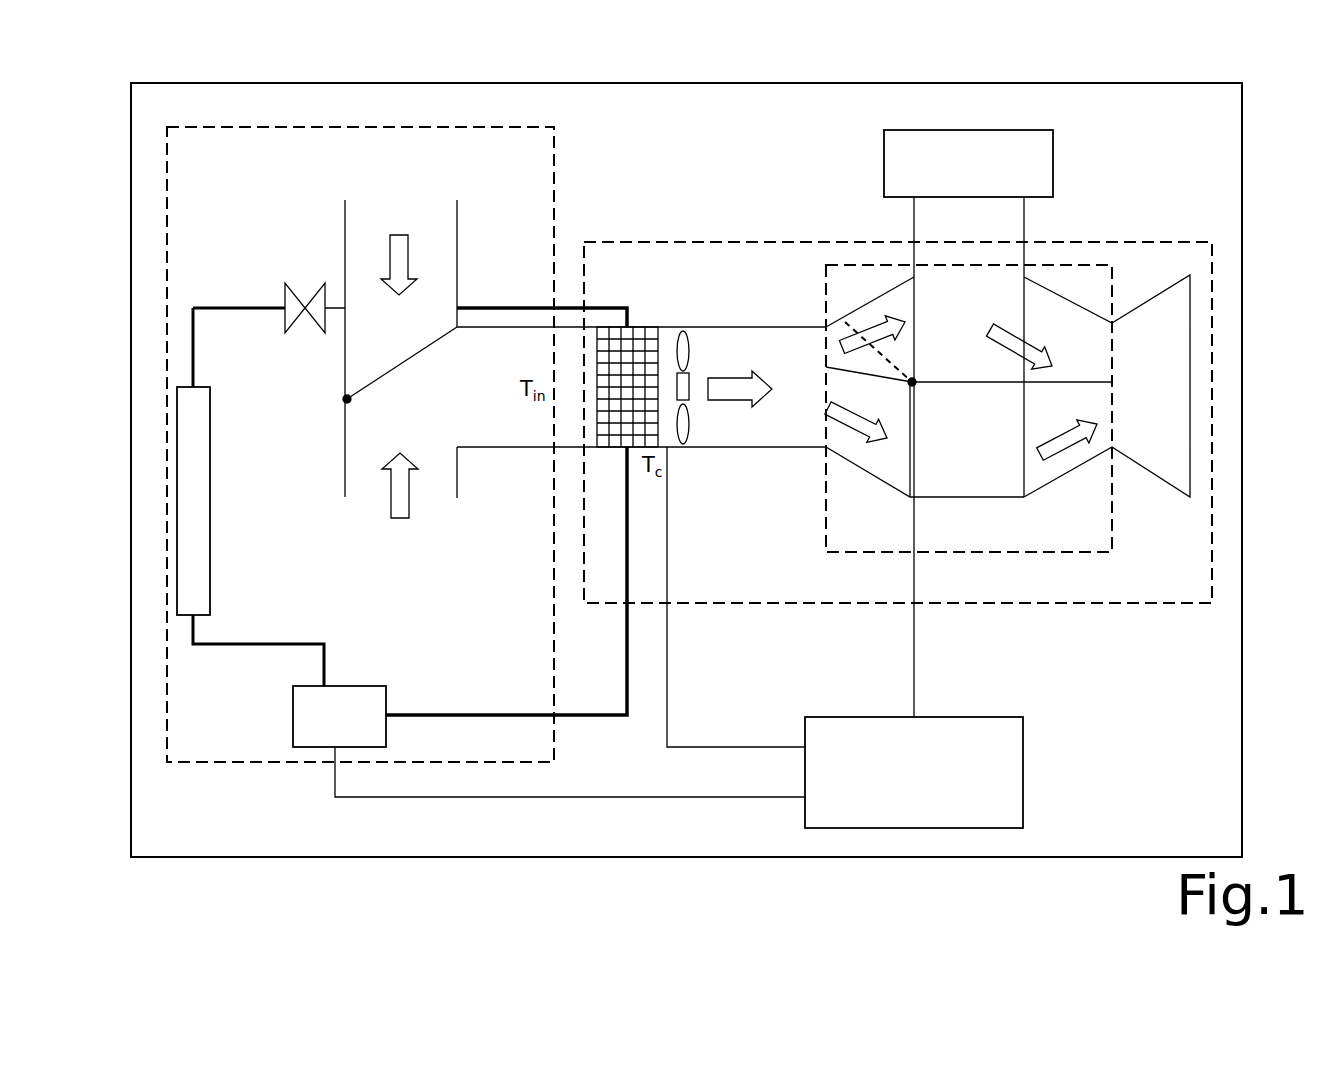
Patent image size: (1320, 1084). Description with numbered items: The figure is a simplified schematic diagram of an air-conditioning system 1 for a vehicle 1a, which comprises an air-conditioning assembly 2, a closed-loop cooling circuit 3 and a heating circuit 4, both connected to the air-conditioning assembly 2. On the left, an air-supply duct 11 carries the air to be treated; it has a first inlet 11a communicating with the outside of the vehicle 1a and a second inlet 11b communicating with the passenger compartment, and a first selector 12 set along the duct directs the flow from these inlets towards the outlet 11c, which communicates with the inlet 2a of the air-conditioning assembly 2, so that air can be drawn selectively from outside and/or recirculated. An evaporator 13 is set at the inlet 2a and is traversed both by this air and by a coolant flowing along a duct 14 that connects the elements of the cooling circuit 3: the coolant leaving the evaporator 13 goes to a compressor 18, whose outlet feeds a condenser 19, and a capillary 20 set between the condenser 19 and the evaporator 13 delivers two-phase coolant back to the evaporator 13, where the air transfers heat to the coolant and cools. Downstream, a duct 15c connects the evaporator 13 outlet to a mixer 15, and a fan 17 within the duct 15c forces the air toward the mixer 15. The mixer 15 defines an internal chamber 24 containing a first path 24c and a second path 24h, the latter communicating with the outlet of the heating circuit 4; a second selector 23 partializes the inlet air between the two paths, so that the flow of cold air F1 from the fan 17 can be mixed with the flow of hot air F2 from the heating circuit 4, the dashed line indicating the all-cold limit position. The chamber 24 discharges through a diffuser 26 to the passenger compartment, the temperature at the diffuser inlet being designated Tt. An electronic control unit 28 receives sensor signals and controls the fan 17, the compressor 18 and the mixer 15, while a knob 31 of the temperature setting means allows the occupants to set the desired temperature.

The air-conditioning system 1 is at (701, 208).
The vehicle 1a is at (521, 848).
The air-conditioning assembly 2 is at (730, 597).
The inlet of the air-conditioning assembly 2a is at (597, 447).
The cooling circuit 3 is at (201, 762).
The heating circuit 4 is at (897, 157).
The air-supply duct 11 is at (471, 473).
The first inlet 11a is at (409, 206).
The second inlet 11b is at (427, 487).
The outlet of the air-supply duct 11c is at (508, 447).
The first selector 12 is at (345, 397).
The evaporator 13 is at (630, 447).
The duct 14 is at (497, 305).
The mixer 15 is at (952, 530).
The duct 15c is at (757, 440).
The fan 17 is at (688, 330).
The compressor 18 is at (310, 700).
The condenser 19 is at (196, 452).
The capillary 20 is at (298, 302).
The second selector 23 is at (910, 388).
The internal chamber 24 is at (878, 320).
The second path 24h is at (995, 220).
The first path 24c is at (1005, 480).
The diffuser 26 is at (1160, 302).
The electronic control unit 28 is at (990, 748).
The knob 31 is at (357, 446).
The flow of cold air F1 is at (740, 400).
The flow of hot air F2 is at (1010, 339).
The temperature at the inlet of the diffuser Tt is at (1087, 372).